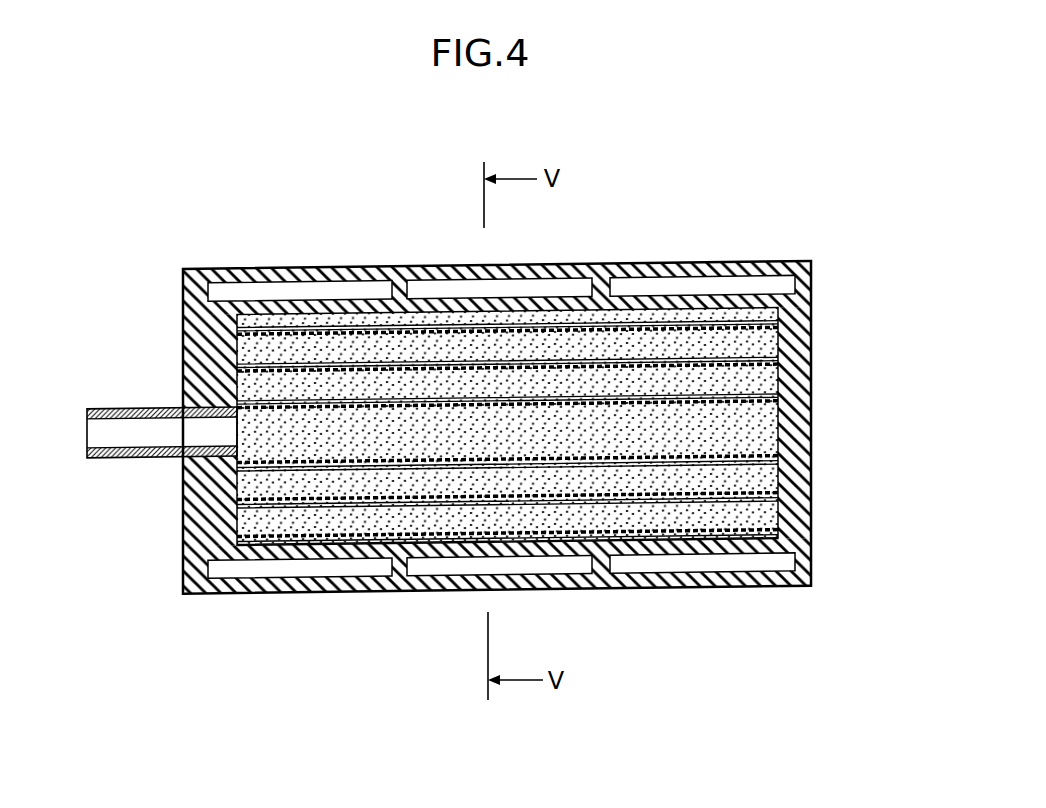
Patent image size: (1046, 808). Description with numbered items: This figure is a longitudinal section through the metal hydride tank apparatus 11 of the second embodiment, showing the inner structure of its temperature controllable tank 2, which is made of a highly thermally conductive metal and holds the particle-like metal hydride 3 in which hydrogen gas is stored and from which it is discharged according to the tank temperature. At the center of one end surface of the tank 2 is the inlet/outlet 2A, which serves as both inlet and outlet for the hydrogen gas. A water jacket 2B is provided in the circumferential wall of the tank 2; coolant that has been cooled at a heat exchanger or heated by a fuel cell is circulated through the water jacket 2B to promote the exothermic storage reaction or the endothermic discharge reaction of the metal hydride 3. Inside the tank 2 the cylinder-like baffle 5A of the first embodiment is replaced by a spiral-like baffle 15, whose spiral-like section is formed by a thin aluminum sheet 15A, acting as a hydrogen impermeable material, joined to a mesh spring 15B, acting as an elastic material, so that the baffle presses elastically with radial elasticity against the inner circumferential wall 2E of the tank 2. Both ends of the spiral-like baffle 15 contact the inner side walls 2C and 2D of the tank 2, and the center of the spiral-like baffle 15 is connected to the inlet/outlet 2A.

The metal hydride tank apparatus 11 is at (664, 235).
The tank 2 is at (387, 262).
The inlet/outlet 2A is at (142, 408).
The water jacket 2B is at (281, 290).
The inner side wall 2C is at (257, 498).
The inner side wall 2D is at (803, 548).
The inner circumferential wall 2E is at (743, 294).
The metal hydride 3 is at (530, 383).
The cylinder-like baffle 5A is at (258, 524).
The spiral-like baffle 15 is at (253, 310).
The thin aluminum sheet 15A is at (758, 355).
The mesh spring 15B is at (733, 368).